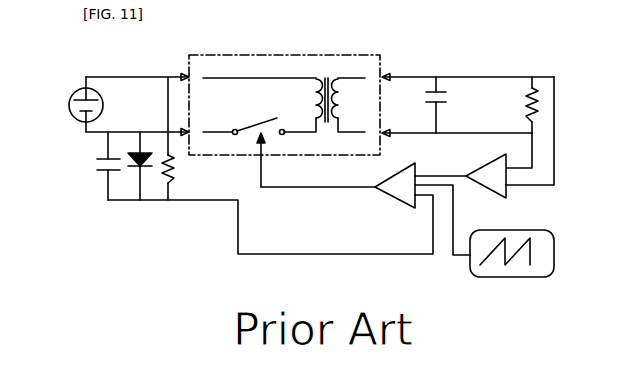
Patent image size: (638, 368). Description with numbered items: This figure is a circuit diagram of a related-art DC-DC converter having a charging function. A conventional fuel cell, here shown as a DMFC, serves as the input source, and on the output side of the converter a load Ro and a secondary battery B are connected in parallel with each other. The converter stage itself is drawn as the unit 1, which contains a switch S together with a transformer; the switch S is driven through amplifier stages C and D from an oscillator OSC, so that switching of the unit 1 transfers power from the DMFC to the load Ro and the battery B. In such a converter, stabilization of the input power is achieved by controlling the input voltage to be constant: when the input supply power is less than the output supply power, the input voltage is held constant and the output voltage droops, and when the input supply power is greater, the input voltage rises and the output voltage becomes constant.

The switching unit (relay with switch S and transformer) 1 is at (326, 102).
The direct methanol fuel cell DMFC is at (64, 99).
The switch S is at (244, 118).
The secondary battery B is at (443, 105).
The load Ro is at (517, 105).
The amplifier # C is at (386, 191).
The amplifier # D is at (479, 171).
The oscillator OSC is at (511, 243).